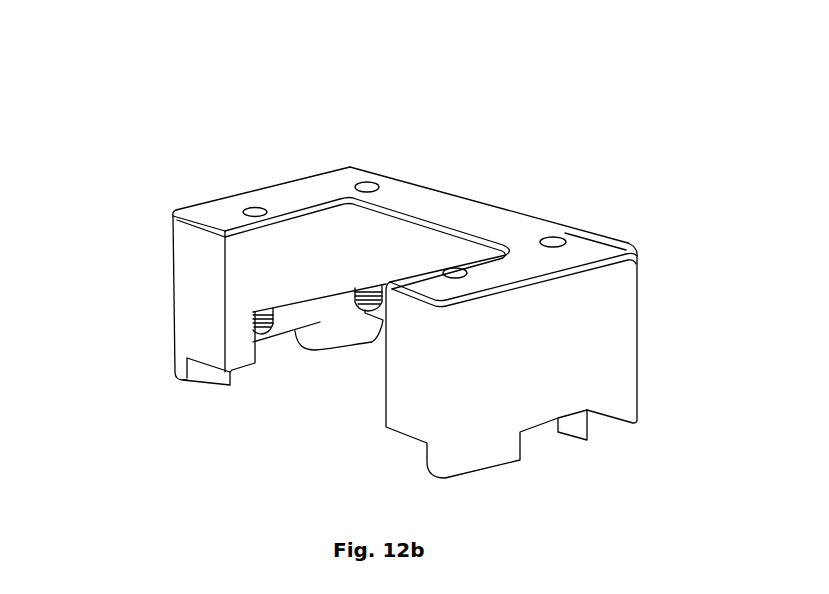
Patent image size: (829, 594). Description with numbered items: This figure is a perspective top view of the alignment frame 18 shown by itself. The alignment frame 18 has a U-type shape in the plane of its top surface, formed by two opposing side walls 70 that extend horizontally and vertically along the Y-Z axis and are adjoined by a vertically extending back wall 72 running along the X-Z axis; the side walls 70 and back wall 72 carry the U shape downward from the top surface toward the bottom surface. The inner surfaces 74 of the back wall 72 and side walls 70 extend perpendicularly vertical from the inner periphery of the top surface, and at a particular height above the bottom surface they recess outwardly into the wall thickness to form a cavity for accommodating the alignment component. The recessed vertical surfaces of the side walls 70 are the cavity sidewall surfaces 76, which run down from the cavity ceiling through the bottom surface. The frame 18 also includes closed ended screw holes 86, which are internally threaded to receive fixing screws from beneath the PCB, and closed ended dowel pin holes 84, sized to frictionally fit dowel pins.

The side walls 70 is at (222, 199).
The alignment frame 18 is at (250, 190).
The back wall 72 is at (480, 200).
The inner surfaces 74 is at (255, 272).
The cavity sidewall surfaces 76 is at (283, 318).
The closed ended dowel pin holes 84 is at (560, 233).
The closed ended screw holes 86 is at (368, 182).